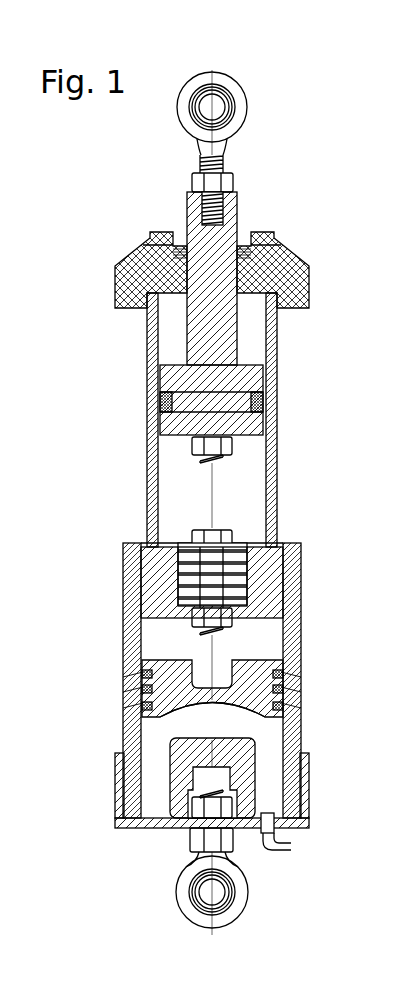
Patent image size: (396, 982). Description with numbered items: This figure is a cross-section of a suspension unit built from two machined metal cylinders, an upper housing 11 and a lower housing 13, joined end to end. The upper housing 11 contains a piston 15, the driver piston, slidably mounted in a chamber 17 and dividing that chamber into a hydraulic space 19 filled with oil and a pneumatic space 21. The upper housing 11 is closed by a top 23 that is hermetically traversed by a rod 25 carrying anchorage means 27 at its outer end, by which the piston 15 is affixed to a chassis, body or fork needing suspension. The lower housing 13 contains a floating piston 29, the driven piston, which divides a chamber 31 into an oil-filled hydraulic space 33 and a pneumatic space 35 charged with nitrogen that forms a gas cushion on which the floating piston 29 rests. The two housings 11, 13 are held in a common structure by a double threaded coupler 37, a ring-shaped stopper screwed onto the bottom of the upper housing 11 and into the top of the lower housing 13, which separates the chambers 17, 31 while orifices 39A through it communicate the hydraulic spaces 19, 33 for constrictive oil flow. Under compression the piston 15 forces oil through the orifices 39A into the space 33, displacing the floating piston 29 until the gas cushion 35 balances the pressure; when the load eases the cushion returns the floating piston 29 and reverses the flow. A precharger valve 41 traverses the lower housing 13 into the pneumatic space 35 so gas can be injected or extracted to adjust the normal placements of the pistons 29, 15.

The upper housing 11 is at (270, 482).
The lower housing 13 is at (301, 713).
The piston 15 is at (260, 396).
The chamber 17 is at (266, 334).
The hydraulic space 19 is at (168, 512).
The pneumatic space 21 is at (170, 343).
The top 23 is at (140, 247).
The rod 25 is at (232, 223).
The anchorage means 27 is at (244, 108).
The floating piston 29 is at (142, 705).
The chamber 31 is at (272, 745).
The hydraulic space 33 is at (160, 638).
The pneumatic space 35 is at (160, 780).
The double threaded coupler 37 is at (283, 598).
The orifices 39A is at (280, 577).
The precharger valve 41 is at (292, 850).